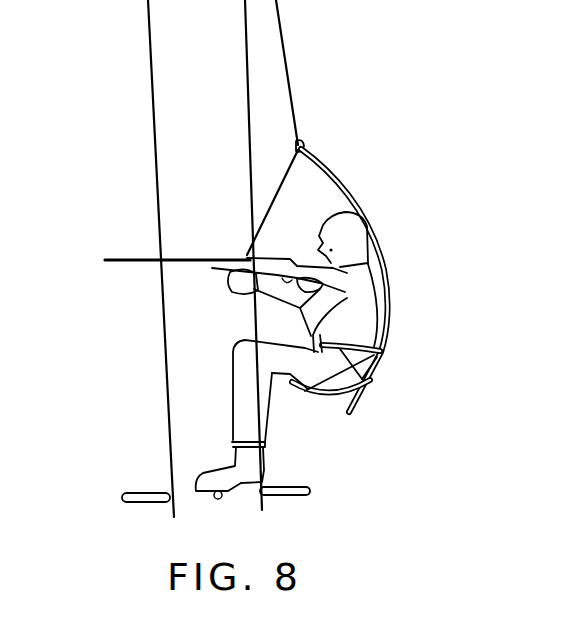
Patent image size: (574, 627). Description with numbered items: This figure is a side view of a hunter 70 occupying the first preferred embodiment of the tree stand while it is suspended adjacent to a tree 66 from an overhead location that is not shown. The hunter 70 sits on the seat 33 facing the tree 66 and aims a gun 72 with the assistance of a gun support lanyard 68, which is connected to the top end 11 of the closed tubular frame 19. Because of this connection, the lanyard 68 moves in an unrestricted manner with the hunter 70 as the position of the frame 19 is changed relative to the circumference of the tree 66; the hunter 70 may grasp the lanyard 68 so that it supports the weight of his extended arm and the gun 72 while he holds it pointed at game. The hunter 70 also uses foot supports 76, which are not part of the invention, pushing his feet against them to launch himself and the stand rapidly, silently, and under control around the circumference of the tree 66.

The tree 66 is at (180, 97).
The gun support lanyard 68 is at (268, 195).
The top end 11 is at (312, 134).
The closed tubular frame 19 is at (360, 179).
The gun 72 is at (130, 260).
The hunter 70 is at (240, 368).
The foot supports 76 is at (143, 495).
The seat 33 is at (315, 416).